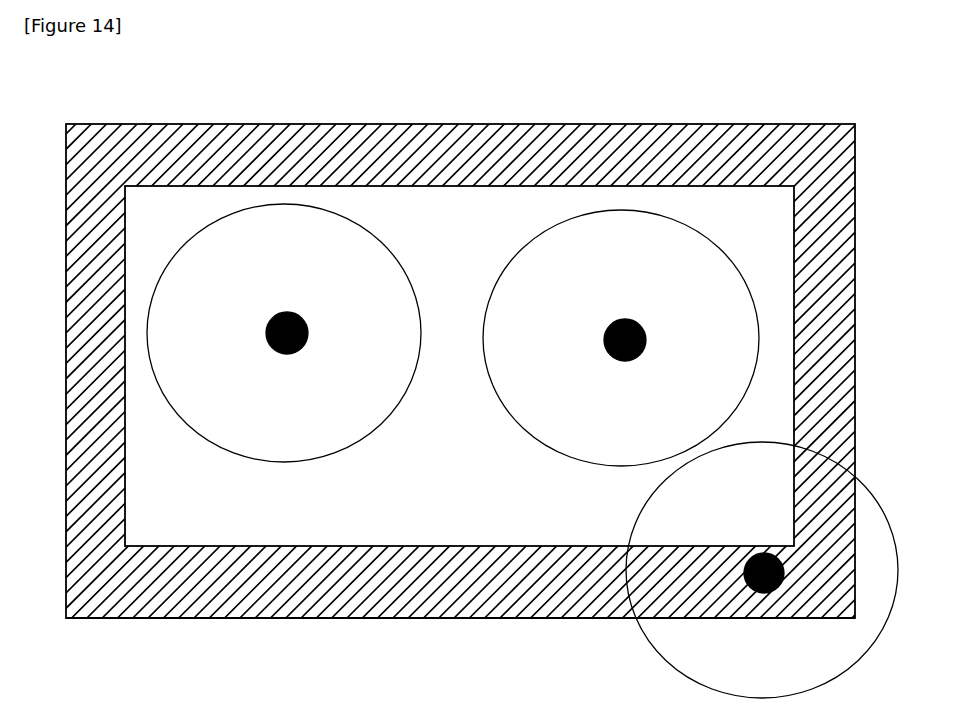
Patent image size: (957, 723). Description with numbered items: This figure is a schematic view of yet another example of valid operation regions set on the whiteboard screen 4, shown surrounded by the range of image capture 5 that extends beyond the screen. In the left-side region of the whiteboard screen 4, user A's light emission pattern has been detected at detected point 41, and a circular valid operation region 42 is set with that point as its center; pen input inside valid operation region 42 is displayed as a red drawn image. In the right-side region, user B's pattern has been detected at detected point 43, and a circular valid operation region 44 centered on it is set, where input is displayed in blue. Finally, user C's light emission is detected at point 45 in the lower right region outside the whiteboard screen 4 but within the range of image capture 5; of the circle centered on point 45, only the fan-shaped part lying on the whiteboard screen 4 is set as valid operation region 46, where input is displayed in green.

The whiteboard screen 4 is at (476, 193).
The range of image capture 5 is at (345, 603).
The detected point 41 is at (287, 312).
The valid operation region 42 is at (289, 222).
The detected point 43 is at (627, 318).
The valid operation region 44 is at (568, 224).
The detected point of light emission 45 is at (760, 577).
The valid operation region 46 is at (665, 508).